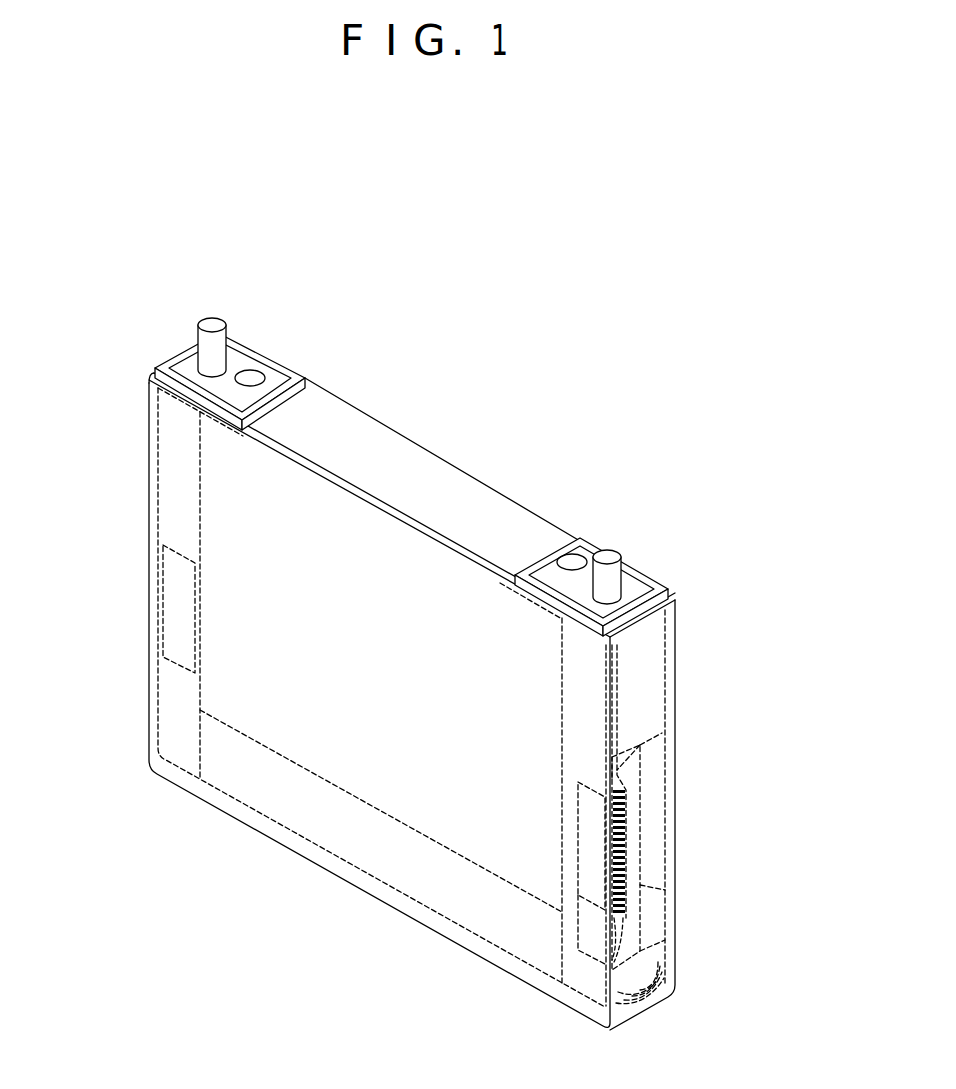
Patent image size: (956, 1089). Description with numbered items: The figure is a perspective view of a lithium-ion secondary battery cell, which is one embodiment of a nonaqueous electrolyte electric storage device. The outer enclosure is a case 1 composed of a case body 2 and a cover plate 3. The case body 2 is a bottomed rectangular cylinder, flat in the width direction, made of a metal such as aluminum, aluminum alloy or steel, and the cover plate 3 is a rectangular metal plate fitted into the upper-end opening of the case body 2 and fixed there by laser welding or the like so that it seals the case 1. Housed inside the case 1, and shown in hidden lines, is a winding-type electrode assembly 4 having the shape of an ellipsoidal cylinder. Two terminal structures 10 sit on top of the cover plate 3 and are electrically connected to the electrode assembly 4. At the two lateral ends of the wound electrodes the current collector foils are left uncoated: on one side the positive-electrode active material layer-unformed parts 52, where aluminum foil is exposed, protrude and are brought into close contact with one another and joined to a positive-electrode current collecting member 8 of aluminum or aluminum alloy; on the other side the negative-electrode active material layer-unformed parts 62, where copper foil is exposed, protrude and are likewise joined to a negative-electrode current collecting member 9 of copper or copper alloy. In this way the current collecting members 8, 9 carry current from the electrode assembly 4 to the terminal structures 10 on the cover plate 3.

The case 1 is at (480, 701).
The case body 2 is at (673, 694).
The cover plate 3 is at (674, 594).
The electrode assembly 4 is at (405, 769).
The positive-electrode current collecting member 8 is at (593, 841).
The negative-electrode current collecting member 9 is at (178, 601).
The terminal structure 10 is at (262, 329).
The positive-electrode active material layer-unformed part 52 is at (587, 955).
The negative-electrode active material layer-unformed part 62 is at (180, 718).